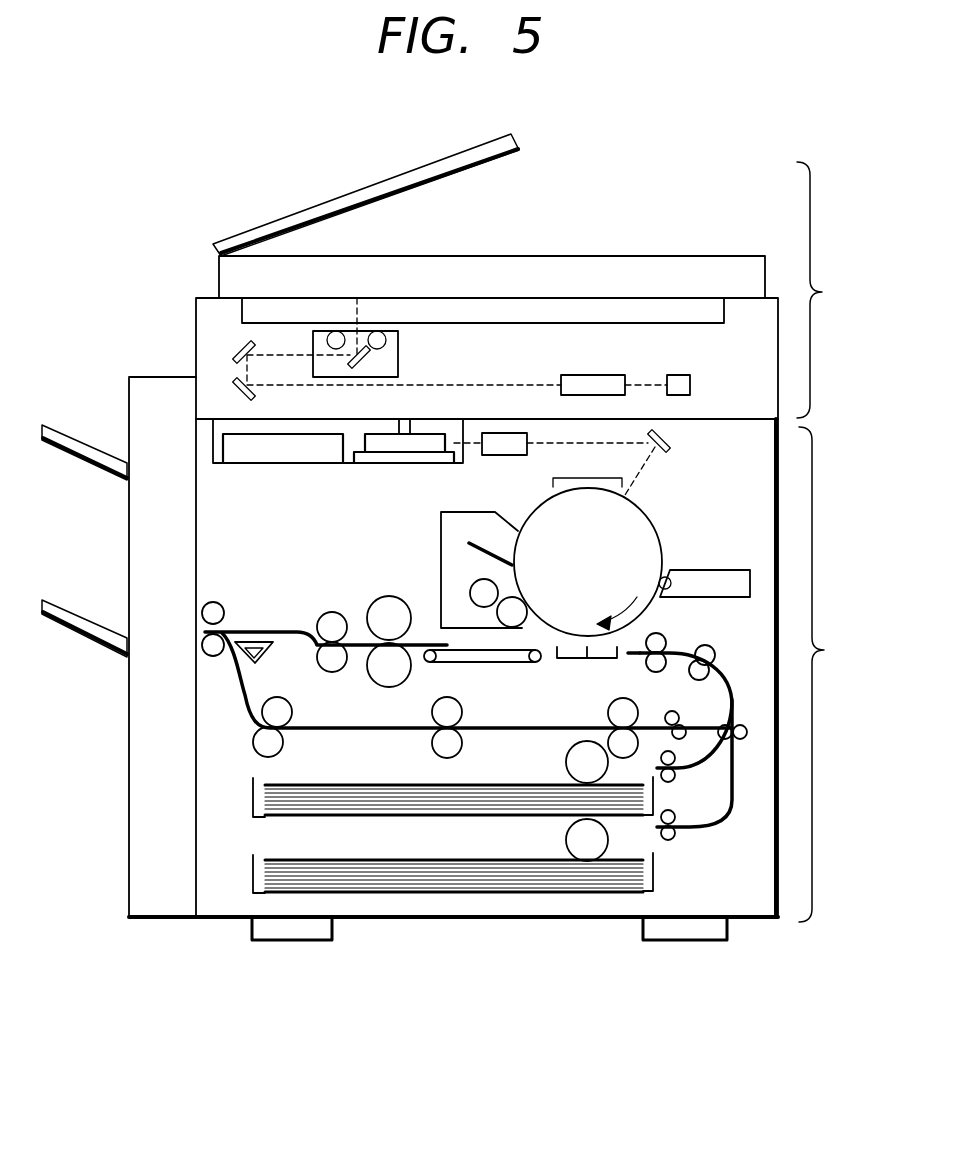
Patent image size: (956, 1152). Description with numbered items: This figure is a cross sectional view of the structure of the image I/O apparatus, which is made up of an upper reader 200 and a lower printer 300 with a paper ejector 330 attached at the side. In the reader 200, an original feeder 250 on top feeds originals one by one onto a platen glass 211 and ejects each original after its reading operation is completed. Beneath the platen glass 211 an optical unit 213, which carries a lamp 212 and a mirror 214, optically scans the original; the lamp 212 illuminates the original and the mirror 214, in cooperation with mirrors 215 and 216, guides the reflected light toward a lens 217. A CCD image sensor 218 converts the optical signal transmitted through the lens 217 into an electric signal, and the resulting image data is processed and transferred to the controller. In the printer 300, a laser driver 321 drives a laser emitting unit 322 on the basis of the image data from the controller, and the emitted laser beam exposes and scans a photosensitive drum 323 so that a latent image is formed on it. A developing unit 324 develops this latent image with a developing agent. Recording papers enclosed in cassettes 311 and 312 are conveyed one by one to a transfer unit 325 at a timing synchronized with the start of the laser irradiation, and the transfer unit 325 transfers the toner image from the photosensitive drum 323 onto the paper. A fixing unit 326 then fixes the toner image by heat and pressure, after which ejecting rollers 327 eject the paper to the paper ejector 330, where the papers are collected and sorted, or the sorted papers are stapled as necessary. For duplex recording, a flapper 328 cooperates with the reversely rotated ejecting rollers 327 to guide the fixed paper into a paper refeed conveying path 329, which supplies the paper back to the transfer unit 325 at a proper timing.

The reader 200 is at (532, 290).
The original feeder 250 is at (360, 188).
The platen glass 211 is at (623, 307).
The lamp 212 is at (383, 337).
The optical unit 213 is at (398, 348).
The mirror 214 is at (367, 353).
The mirror 215 is at (240, 350).
The mirror 216 is at (232, 387).
The lens 217 is at (600, 375).
The CCD image sensor 218 is at (682, 375).
The printer 300 is at (498, 670).
The cassette 311 is at (468, 782).
The cassette 312 is at (432, 860).
The laser driver 321 is at (252, 453).
The laser emitting unit 322 is at (383, 465).
The photosensitive drum 323 is at (652, 517).
The developing unit 324 is at (737, 570).
The transfer unit 325 is at (575, 660).
The fixing unit 326 is at (365, 640).
The ejecting rollers 327 is at (203, 637).
The flapper 328 is at (267, 657).
The paper refeed conveying path 329 is at (432, 753).
The paper ejector 330 is at (145, 920).